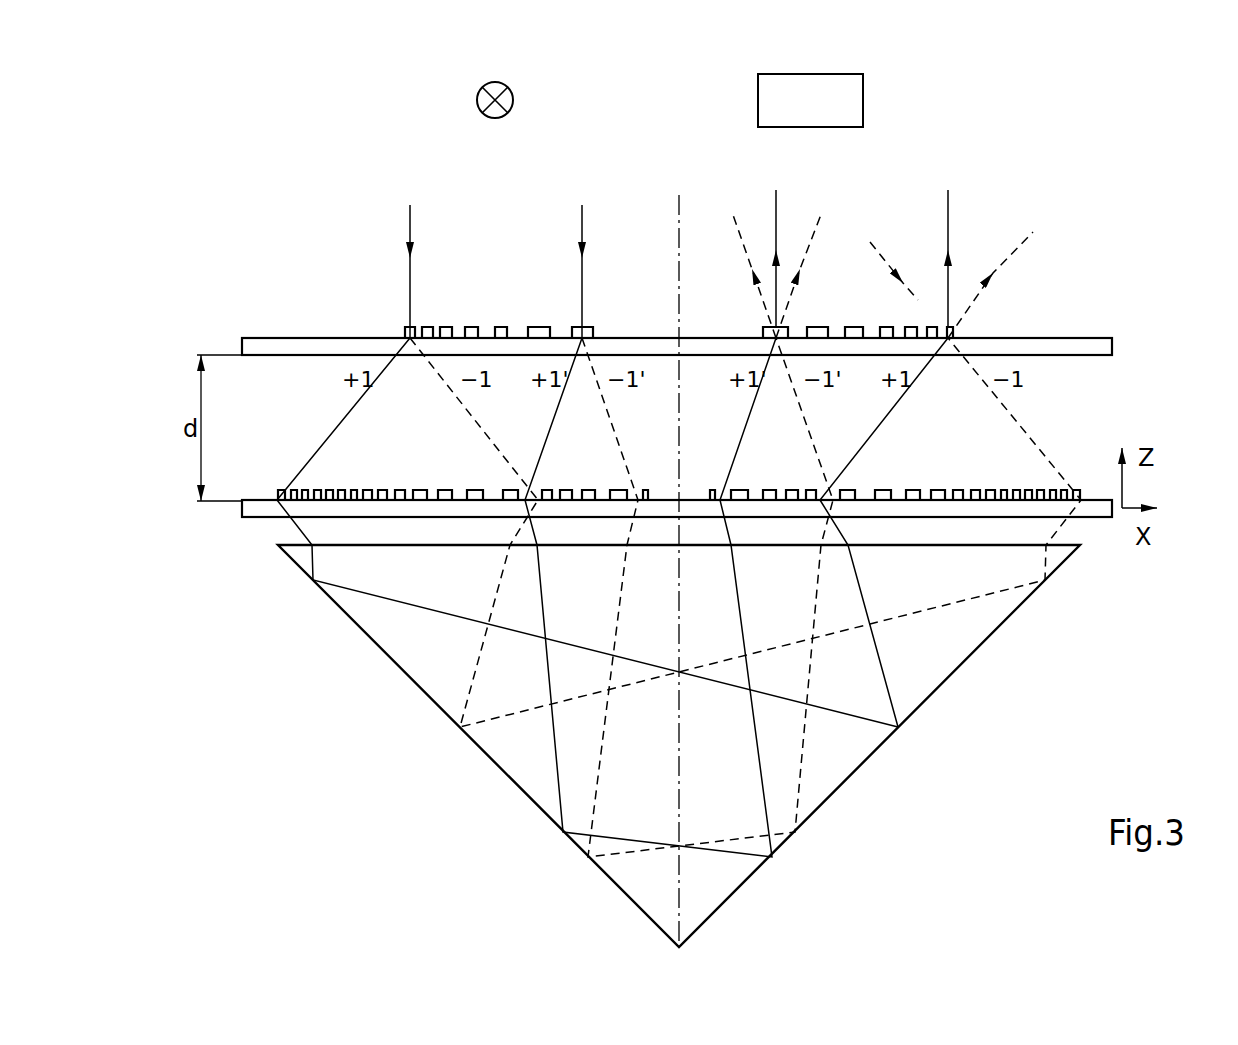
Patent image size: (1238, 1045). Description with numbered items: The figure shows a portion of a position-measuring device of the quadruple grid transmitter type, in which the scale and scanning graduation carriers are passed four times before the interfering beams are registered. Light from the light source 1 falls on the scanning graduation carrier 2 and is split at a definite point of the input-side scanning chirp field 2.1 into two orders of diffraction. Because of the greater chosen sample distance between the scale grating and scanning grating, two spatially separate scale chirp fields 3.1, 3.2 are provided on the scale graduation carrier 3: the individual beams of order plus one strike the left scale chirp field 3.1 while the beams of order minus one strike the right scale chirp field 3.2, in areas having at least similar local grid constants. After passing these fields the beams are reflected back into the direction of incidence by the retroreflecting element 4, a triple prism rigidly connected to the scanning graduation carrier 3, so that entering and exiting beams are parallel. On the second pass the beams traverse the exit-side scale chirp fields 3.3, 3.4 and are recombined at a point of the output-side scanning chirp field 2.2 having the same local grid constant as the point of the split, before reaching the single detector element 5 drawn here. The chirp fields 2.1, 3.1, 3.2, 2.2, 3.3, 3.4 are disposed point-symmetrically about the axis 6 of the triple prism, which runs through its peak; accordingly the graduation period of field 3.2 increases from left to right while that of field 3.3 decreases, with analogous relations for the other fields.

The light source 1 is at (478, 103).
The scanning graduation carrier 2 is at (266, 338).
The input-side scanning chirp field 2.1 is at (474, 327).
The output-side scanning chirp field 2.2 is at (826, 327).
The scale graduation carrier 3 is at (253, 517).
The scale chirp field 3.1 is at (396, 490).
The scale chirp field 3.2 is at (580, 490).
The scale chirp field 3.3 is at (772, 490).
The scale chirp field 3.4 is at (940, 490).
The retroreflecting element 4 is at (395, 648).
The detector element 5 is at (863, 105).
The axis 6 is at (679, 248).